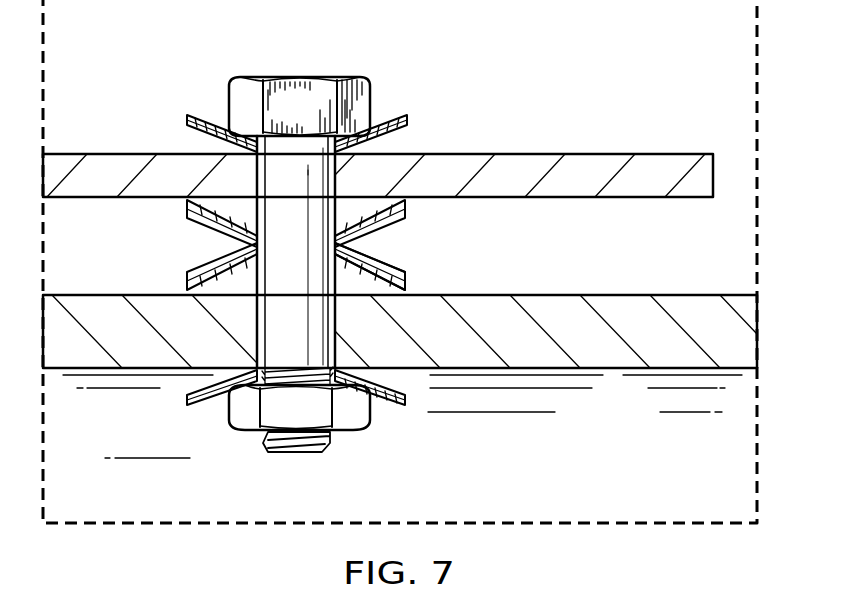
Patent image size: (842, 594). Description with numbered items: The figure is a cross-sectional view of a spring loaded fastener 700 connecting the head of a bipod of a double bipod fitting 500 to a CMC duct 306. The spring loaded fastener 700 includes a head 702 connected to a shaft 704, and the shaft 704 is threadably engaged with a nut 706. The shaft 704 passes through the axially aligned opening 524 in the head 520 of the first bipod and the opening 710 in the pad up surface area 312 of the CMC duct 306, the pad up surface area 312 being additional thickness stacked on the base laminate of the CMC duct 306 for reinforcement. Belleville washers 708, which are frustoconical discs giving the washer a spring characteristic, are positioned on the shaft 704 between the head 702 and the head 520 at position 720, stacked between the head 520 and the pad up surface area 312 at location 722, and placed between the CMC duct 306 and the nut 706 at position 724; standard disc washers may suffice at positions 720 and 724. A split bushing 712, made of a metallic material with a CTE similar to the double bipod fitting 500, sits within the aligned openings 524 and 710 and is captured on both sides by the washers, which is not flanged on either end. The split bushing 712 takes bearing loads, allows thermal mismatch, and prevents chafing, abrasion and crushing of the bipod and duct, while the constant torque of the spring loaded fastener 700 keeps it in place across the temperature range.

The spring loaded fastener 700 is at (355, 48).
The head 702 is at (268, 77).
The shaft 704 is at (340, 330).
The nut 706 is at (240, 432).
The Belleville washers 708 is at (398, 239).
The opening 710 is at (264, 322).
The split bushing 712 is at (343, 180).
The position 720 is at (163, 129).
The location 722 is at (165, 250).
The position 724 is at (158, 412).
The double bipod fitting 500 is at (642, 91).
The head 520 is at (720, 167).
The opening 524 is at (264, 172).
The pad up surface area 312 is at (615, 294).
The CMC duct 306 is at (613, 370).